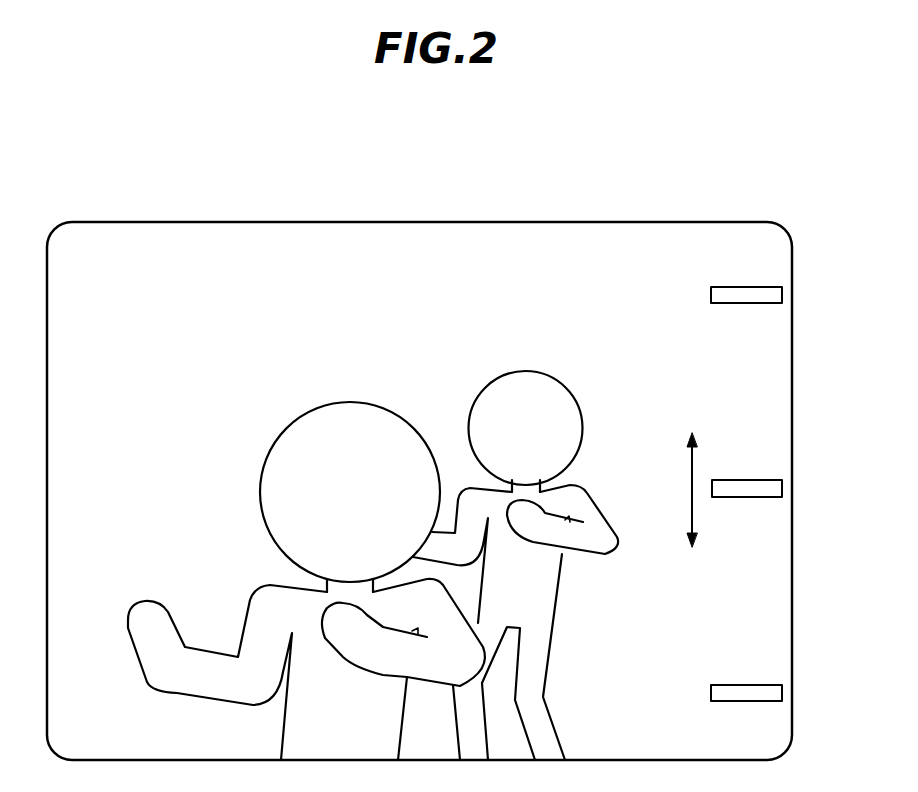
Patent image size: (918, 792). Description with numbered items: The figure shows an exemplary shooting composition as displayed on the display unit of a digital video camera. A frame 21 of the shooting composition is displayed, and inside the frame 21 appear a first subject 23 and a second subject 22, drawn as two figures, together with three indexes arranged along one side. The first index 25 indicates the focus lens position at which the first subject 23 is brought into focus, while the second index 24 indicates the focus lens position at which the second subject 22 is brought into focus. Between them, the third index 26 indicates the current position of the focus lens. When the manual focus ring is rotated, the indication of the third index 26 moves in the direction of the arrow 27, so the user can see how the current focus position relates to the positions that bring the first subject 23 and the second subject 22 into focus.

The frame 21 is at (610, 222).
The second subject 22 is at (353, 402).
The first subject 23 is at (526, 372).
The second index 24 is at (783, 691).
The first index 25 is at (783, 291).
The third index 26 is at (783, 487).
The arrow 27 is at (695, 430).